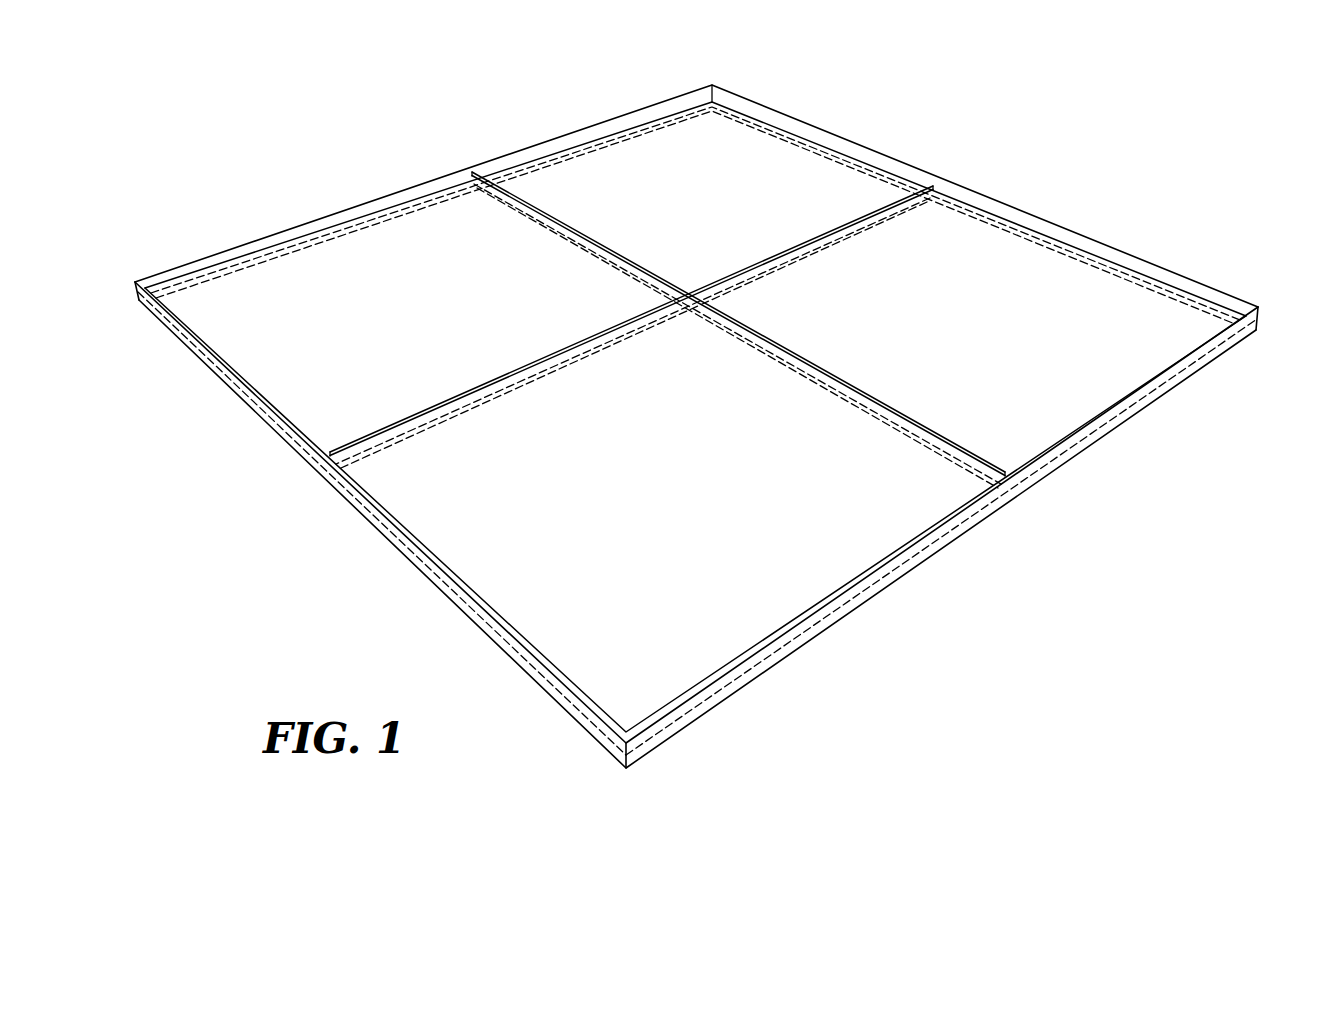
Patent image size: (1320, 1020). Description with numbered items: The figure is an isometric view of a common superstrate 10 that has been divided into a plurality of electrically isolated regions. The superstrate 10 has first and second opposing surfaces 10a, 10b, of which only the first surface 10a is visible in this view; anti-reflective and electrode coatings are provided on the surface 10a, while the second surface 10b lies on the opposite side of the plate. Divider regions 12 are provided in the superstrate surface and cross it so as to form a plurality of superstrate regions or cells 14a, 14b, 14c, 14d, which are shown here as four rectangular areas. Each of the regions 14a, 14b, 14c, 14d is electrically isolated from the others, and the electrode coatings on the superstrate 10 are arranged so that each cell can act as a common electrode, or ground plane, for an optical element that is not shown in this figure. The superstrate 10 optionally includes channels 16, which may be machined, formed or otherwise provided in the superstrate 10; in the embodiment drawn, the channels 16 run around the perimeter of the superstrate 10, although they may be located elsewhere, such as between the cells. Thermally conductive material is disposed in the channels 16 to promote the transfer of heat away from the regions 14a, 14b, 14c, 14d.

The common superstrate 10 is at (696, 426).
The first surface 10a is at (696, 414).
The second surface 10b is at (1182, 394).
The divider regions 12 is at (539, 211).
The superstrate region 14a is at (368, 320).
The superstrate region 14b is at (689, 192).
The superstrate region 14c is at (913, 319).
The superstrate region 14d is at (643, 510).
The channels 16 is at (292, 227).